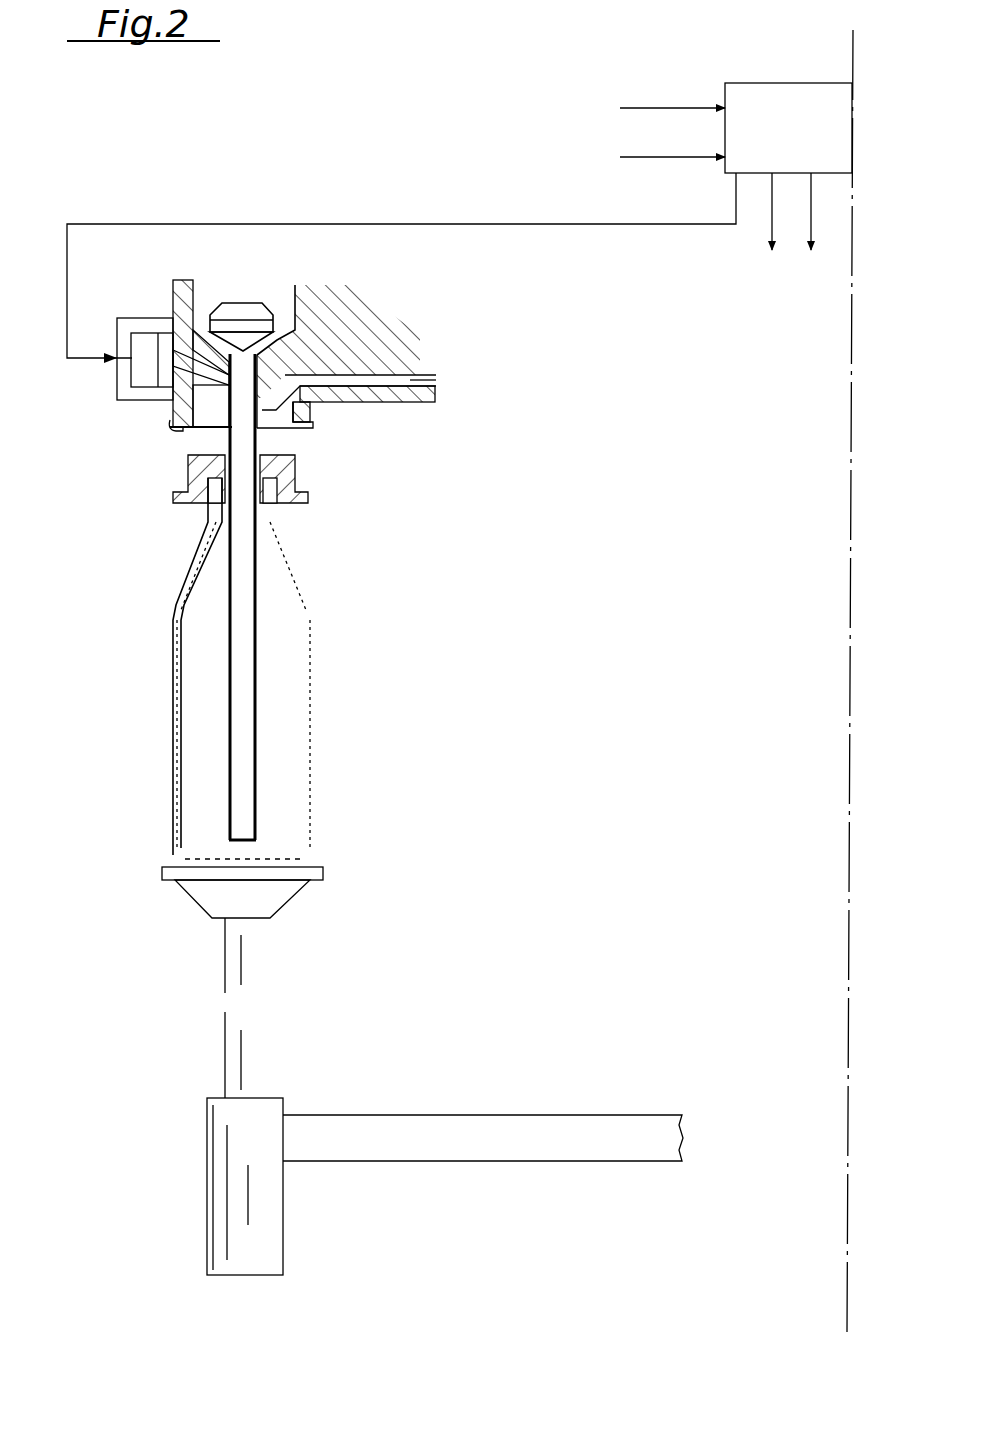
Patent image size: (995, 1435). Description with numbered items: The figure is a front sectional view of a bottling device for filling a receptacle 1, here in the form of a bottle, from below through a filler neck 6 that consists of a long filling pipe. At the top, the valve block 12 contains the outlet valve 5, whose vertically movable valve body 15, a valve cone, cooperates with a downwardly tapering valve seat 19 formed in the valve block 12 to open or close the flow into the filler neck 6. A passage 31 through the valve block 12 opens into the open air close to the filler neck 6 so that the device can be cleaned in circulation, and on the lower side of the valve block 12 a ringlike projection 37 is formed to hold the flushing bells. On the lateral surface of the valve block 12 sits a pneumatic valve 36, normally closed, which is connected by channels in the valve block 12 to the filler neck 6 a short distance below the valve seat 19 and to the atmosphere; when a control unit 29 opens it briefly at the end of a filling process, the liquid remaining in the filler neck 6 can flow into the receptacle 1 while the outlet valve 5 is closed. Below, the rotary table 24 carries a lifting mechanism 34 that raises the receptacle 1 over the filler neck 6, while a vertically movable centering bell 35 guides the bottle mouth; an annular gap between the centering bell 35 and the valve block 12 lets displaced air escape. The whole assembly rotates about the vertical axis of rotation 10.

The receptacle 1 is at (314, 796).
The outlet valve 5 is at (203, 305).
The filler neck 6 is at (256, 700).
The axis of rotation 10 is at (853, 43).
The valve block 12 is at (387, 395).
The valve body 15 is at (232, 313).
The valve seat 19 is at (285, 330).
The rotary table 24 is at (453, 1137).
The control unit 29 is at (806, 132).
The passage 31 is at (437, 381).
The lifting mechanism 34 is at (253, 1148).
The centering bell 35 is at (308, 504).
The pneumatic valve 36 is at (132, 328).
The ringlike projection 37 is at (175, 428).